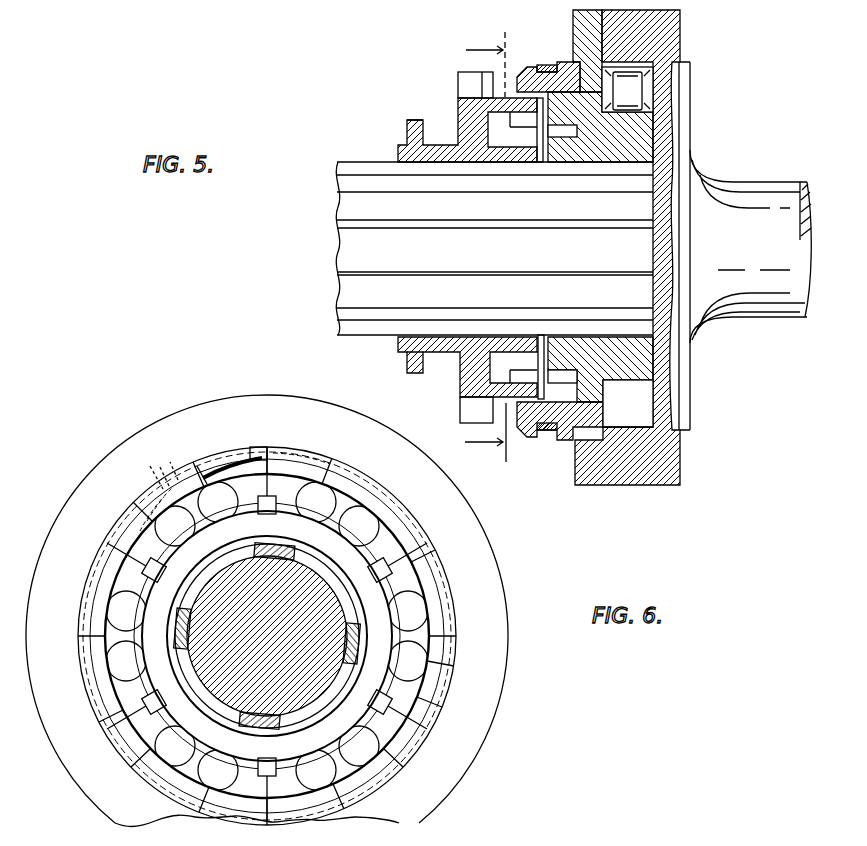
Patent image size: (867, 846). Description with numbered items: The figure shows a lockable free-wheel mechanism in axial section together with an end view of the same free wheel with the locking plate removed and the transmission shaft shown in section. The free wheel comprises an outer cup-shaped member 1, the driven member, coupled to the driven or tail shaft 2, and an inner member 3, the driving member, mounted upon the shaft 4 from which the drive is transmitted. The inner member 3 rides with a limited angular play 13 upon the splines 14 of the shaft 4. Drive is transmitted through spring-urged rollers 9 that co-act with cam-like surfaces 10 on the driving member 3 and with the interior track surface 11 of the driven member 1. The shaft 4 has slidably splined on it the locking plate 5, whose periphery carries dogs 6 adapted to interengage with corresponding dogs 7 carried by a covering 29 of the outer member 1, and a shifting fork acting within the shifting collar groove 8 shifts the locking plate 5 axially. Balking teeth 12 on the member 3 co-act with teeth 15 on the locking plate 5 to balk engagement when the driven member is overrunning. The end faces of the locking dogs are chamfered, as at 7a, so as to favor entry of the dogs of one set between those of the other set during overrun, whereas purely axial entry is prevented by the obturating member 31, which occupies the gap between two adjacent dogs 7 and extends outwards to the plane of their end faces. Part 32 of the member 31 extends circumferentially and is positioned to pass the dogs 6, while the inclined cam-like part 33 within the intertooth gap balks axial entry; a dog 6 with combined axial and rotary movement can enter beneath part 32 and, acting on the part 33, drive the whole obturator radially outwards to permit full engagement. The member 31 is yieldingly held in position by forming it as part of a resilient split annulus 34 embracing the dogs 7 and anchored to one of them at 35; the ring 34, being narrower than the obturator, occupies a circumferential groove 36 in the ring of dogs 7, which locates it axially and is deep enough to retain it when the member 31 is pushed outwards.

In FIG. 5, the outer cup-shaped member 1 is at (643, 38).
In FIG. 5, the driven or tail shaft 2 is at (747, 280).
In FIG. 5, the inner member 3 is at (660, 137).
In FIG. 6, the inner member 3 is at (143, 602).
In FIG. 5, the shaft 4 is at (400, 253).
In FIG. 6, the shaft 4 is at (305, 700).
In FIG. 5, the locking plate 5 is at (462, 110).
In FIG. 5, the dogs 6 is at (468, 80).
In FIG. 5, the dogs 7 is at (517, 77).
In FIG. 6, the dogs 7 is at (410, 553).
In FIG. 6, the inclined or chamfered end faces 7a is at (282, 467).
In FIG. 5, the shifting collar groove 8 is at (437, 128).
In FIG. 5, the spring-urged rollers 9 is at (643, 87).
In FIG. 5, the cam-like surfaces 10 is at (637, 383).
In FIG. 6, the cam-like surfaces 10 is at (350, 520).
In FIG. 5, the interior track surface 11 is at (637, 418).
In FIG. 5, the balking teeth or dogs 12 is at (565, 375).
In FIG. 6, the balking teeth or dogs 12 is at (400, 573).
In FIG. 6, the limited angular play 13 is at (360, 658).
In FIG. 5, the splines 14 is at (345, 282).
In FIG. 6, the splines 14 is at (363, 596).
In FIG. 5, the teeth or dogs 15 is at (515, 377).
In FIG. 5, the covering 29 is at (602, 17).
In FIG. 6, the covering 29 is at (457, 517).
In FIG. 6, the obturating member 31 is at (213, 465).
In FIG. 6, the circumferentially extending part 32 is at (252, 453).
In FIG. 6, the inclined cam-like part 33 is at (160, 487).
In FIG. 5, the resilient split annulus 34 is at (540, 65).
In FIG. 6, the resilient split annulus 34 is at (160, 778).
In FIG. 6, the anchorage 35 is at (153, 480).
In FIG. 5, the circumferential groove 36 is at (547, 63).